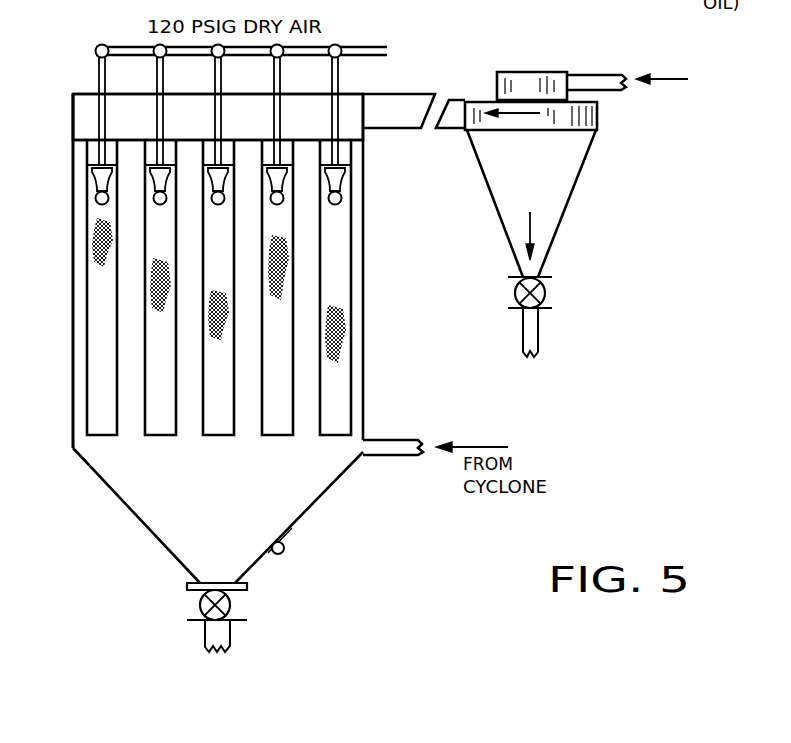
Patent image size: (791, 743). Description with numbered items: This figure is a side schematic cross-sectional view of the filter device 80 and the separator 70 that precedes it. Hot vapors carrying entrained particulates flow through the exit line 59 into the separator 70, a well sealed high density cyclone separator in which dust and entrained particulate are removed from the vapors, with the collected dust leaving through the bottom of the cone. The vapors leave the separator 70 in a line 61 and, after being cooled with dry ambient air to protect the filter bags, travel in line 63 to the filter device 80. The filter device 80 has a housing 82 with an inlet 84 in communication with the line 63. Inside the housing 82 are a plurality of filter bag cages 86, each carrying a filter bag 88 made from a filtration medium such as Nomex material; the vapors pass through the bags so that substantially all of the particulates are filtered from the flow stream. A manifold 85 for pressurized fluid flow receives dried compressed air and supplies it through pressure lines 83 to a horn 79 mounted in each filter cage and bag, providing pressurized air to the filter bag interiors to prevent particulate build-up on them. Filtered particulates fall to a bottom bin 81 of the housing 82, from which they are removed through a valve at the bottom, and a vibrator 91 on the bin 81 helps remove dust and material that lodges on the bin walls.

The exit line 59 is at (601, 72).
The line 61 is at (455, 132).
The line 63 is at (373, 97).
The separator 70 is at (570, 200).
The horn 79 is at (97, 188).
The filter device 80 is at (365, 366).
The bottom bin 81 is at (337, 480).
The housing 82 is at (73, 428).
The pressure lines 83 is at (98, 73).
The inlet 84 is at (365, 116).
The manifold 85 is at (353, 50).
The filter bag cages 86 is at (86, 164).
The filter bag 88 is at (88, 278).
The vibrator 91 is at (286, 545).